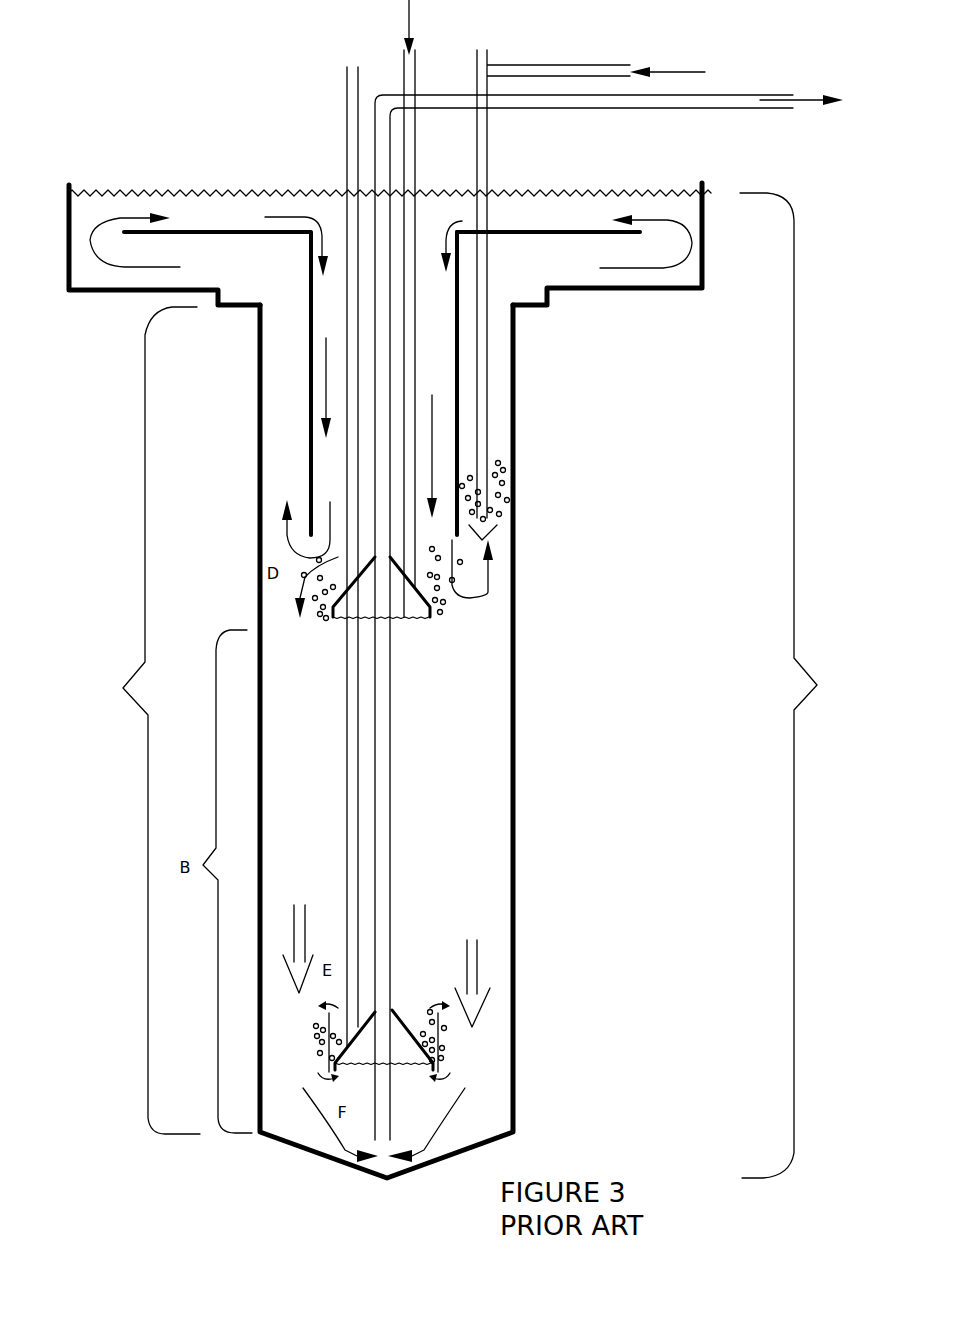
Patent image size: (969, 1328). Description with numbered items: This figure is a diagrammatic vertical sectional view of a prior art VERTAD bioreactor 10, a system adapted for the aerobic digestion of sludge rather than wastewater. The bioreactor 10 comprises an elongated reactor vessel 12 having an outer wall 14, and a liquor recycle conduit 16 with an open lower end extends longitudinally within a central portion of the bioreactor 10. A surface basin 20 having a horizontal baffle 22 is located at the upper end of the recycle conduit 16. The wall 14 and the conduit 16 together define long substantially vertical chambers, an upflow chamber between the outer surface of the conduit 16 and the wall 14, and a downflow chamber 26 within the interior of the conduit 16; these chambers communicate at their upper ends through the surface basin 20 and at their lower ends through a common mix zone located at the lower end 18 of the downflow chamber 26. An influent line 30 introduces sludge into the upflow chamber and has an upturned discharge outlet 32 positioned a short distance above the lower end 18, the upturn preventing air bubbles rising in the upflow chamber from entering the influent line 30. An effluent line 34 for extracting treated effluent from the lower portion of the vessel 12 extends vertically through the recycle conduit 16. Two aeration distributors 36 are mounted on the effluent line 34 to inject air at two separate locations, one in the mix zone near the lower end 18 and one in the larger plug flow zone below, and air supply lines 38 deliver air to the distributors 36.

The bioreactor 10 is at (790, 685).
The reactor vessel 12 is at (145, 720).
The outer wall 14 is at (517, 878).
The liquor recycle conduit 16 is at (457, 382).
The lower end of downflow chamber 18 is at (327, 480).
The surface basin 20 is at (702, 185).
The horizontal baffle 22 is at (582, 230).
The downflow chamber 26 is at (432, 413).
The influent line 30 is at (487, 55).
The upturned discharge outlet 32 is at (493, 525).
The effluent line 34 is at (393, 967).
The aeration distributor 36 is at (437, 598).
The air supply line 38 is at (351, 62).